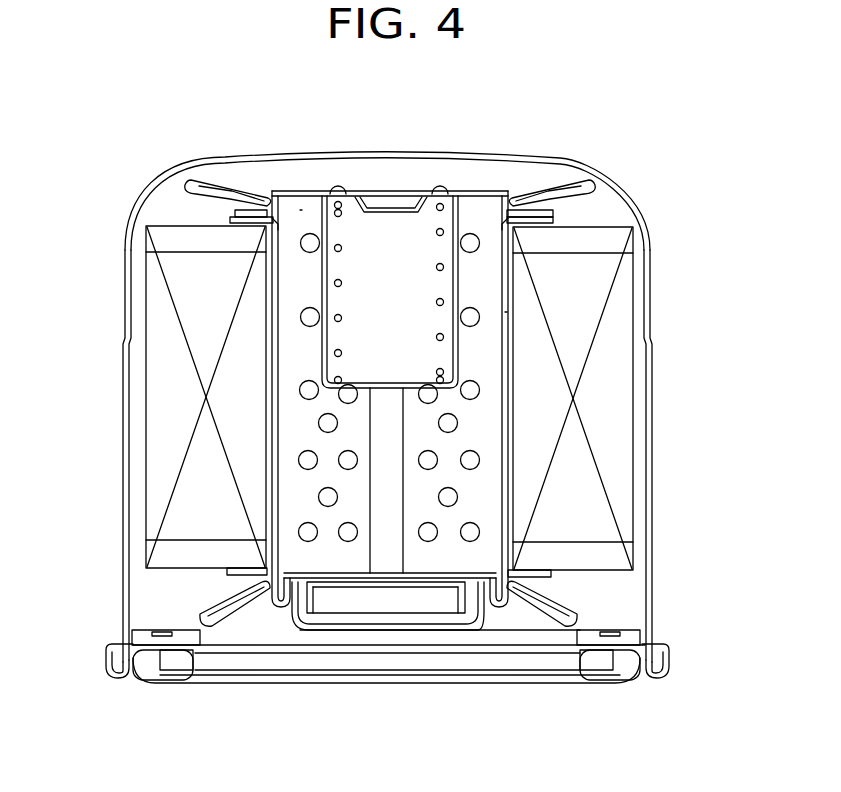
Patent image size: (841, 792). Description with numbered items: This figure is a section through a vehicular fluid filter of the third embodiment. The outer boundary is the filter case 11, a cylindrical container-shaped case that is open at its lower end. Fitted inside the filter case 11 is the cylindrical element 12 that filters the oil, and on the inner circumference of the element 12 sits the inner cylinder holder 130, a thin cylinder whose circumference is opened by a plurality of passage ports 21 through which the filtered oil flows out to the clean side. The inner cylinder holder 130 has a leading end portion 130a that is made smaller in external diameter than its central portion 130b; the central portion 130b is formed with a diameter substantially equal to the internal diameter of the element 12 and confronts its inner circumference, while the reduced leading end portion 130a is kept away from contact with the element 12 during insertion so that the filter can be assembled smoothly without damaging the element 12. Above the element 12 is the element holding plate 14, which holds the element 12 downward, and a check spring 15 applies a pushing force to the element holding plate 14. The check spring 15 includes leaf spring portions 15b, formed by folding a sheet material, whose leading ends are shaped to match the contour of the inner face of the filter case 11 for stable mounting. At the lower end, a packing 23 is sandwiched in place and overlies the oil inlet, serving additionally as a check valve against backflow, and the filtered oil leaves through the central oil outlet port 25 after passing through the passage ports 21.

The filter case 11 is at (452, 154).
The element 12 is at (620, 385).
The element holding plate 14 is at (477, 190).
The check spring 15 is at (253, 178).
The leaf spring portions 15b is at (540, 190).
The passage ports 21 is at (475, 461).
The packing 23 is at (205, 589).
The oil outlet port 25 is at (413, 600).
The inner cylinder holder 130 is at (296, 500).
The leading end portion 130a is at (302, 210).
The central portion 130b is at (508, 312).